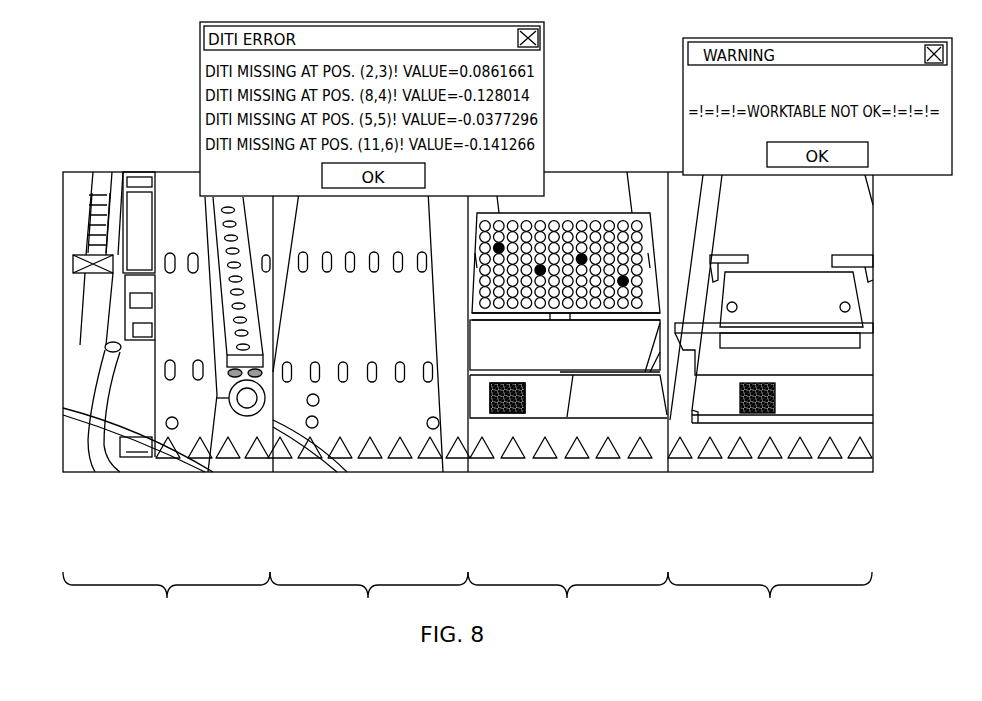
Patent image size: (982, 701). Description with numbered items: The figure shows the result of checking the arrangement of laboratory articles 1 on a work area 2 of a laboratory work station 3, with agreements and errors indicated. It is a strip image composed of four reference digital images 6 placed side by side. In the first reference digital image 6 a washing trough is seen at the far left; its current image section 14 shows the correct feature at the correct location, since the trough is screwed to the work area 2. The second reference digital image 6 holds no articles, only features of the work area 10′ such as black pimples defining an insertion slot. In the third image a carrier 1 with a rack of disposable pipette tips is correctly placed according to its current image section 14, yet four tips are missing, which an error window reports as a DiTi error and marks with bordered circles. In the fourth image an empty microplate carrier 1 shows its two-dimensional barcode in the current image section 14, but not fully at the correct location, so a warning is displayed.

The laboratory article / carrier 1 is at (208, 472).
The work area 2 is at (307, 352).
The laboratory work station 3 is at (150, 482).
The reference digital image 6 is at (467, 598).
The features of the work area 10′ is at (328, 402).
The current image section 14 is at (91, 282).